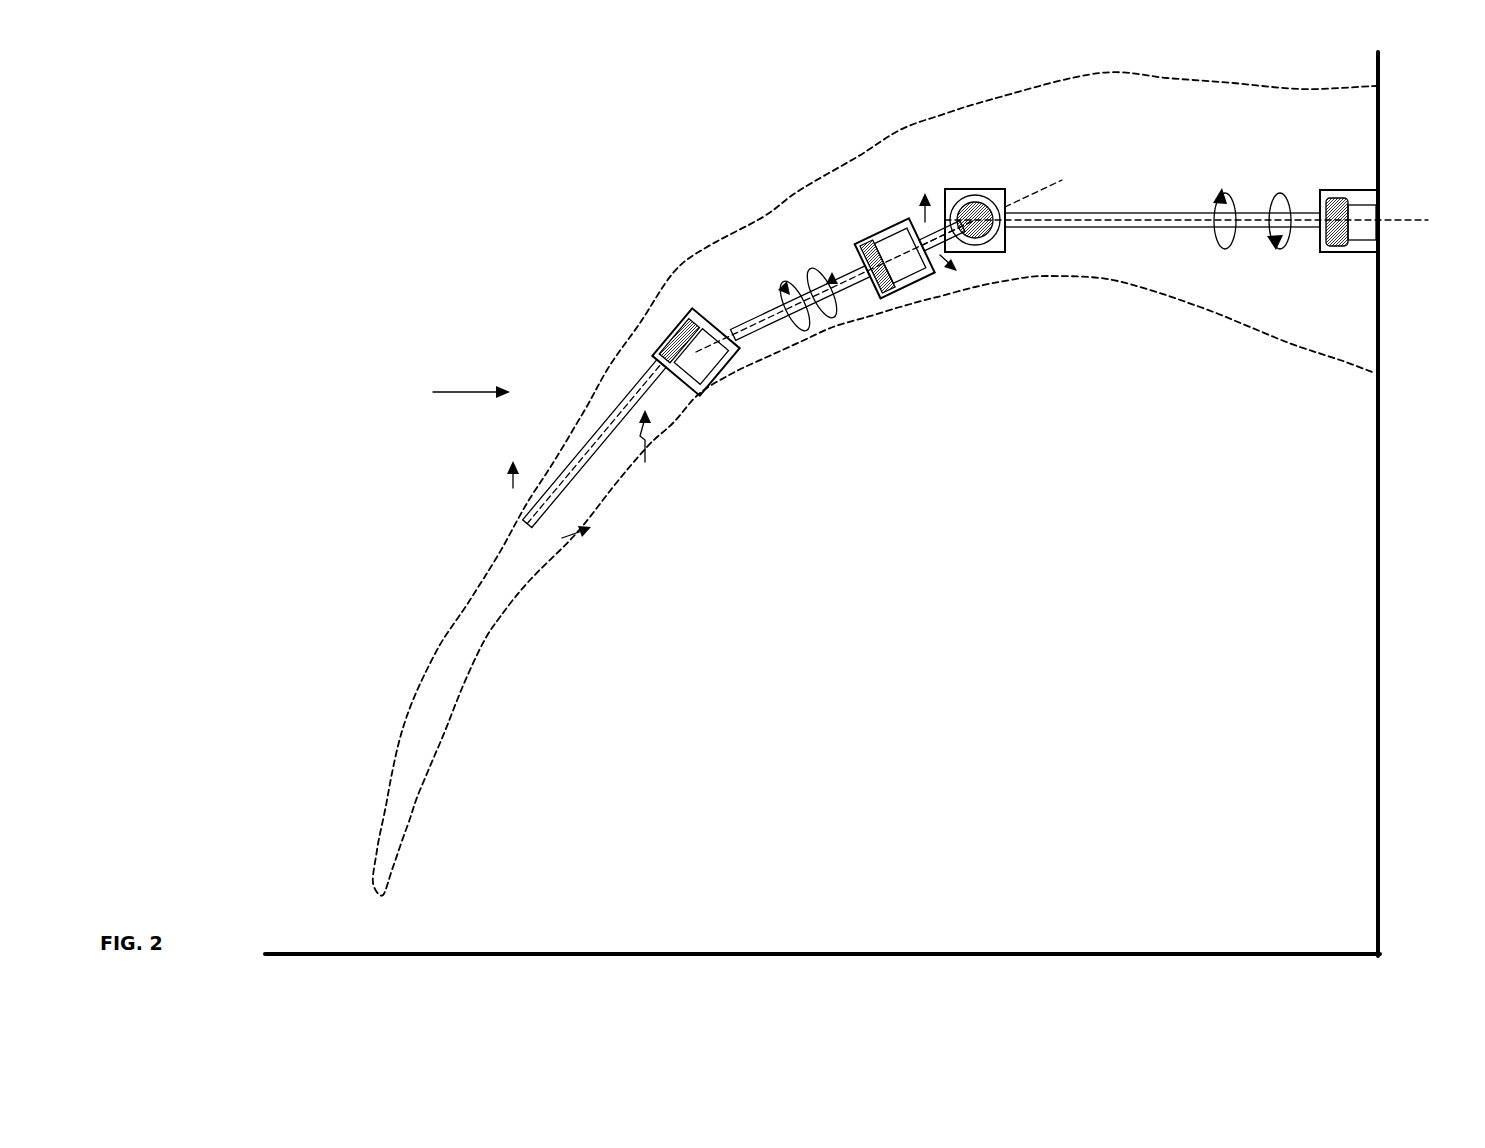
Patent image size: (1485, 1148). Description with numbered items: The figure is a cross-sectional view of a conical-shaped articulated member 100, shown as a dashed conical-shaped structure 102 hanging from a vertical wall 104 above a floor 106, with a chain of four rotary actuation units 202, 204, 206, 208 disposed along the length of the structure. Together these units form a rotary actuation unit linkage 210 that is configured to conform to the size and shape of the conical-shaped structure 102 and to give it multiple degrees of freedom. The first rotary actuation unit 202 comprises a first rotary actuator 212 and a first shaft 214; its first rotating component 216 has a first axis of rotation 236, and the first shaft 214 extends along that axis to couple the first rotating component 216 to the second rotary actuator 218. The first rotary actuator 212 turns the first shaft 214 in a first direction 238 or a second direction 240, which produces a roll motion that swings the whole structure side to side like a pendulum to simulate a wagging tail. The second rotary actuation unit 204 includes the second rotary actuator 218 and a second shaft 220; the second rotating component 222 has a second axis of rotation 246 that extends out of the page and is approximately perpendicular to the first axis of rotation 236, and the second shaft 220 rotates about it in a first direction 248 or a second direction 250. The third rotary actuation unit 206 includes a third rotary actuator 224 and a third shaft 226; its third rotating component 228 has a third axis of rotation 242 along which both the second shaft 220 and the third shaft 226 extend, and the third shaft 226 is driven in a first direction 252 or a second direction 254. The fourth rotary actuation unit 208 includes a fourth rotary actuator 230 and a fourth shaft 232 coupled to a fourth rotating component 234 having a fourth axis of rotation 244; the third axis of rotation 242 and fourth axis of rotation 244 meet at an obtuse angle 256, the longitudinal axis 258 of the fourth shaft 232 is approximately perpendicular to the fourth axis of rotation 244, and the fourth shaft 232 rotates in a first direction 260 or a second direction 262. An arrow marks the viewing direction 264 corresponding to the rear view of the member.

The conical-shaped articulated member 100 is at (562, 127).
The conical-shaped structure 102 is at (948, 112).
The wall 104 is at (1380, 624).
The floor 106 is at (800, 952).
The first rotary actuation unit 202 is at (1192, 192).
The second rotary actuation unit 204 is at (926, 183).
The third rotary actuation unit 206 is at (806, 206).
The fourth rotary actuation unit 208 is at (643, 454).
The rotary actuation unit linkage 210 is at (1311, 150).
The first rotary actuator 212 is at (1357, 253).
The first shaft 214 is at (1135, 229).
The first rotating component 216 is at (1333, 251).
The second rotary actuator 218 is at (982, 253).
The second shaft 220 is at (940, 192).
The second rotating component 222 is at (1003, 252).
The third rotary actuator 224 is at (914, 282).
The third shaft 226 is at (757, 350).
The third rotating component 228 is at (888, 297).
The fourth rotary actuator 230 is at (700, 397).
The fourth shaft 232 is at (628, 377).
The fourth rotating component 234 is at (690, 316).
The first axis of rotation 236 is at (1415, 219).
The first direction 238 is at (1279, 193).
The second direction 240 is at (1223, 193).
The third axis of rotation 242 is at (779, 331).
The fourth axis of rotation 244 is at (706, 362).
The second axis of rotation 246 is at (977, 198).
The first direction 248 is at (921, 214).
The second direction 250 is at (942, 274).
The first direction 252 is at (824, 271).
The second direction 254 is at (792, 276).
The obtuse angle 256 is at (718, 308).
The longitudinal axis 258 is at (520, 532).
The first direction 260 is at (510, 480).
The second direction 262 is at (562, 539).
The direction 264 is at (440, 390).